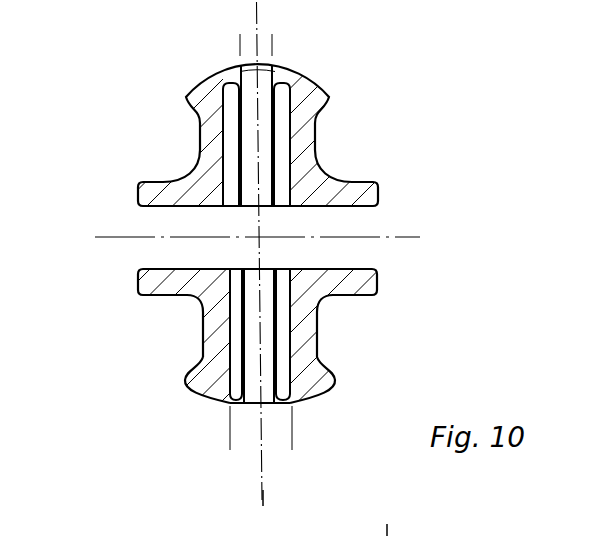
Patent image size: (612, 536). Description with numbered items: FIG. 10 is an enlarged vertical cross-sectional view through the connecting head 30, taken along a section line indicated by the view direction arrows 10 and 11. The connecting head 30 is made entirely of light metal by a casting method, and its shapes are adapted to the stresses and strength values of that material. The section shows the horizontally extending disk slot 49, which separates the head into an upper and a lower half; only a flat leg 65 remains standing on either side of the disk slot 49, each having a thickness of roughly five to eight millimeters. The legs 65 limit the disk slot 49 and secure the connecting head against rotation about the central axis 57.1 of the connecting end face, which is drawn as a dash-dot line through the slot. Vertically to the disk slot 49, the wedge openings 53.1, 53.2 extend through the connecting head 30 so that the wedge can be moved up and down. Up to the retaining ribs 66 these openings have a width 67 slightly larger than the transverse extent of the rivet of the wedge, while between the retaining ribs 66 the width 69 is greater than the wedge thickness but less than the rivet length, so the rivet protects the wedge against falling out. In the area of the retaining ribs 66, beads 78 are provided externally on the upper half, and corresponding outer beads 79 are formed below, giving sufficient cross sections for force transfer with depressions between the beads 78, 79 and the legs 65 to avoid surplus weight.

The connecting head 30 is at (105, 86).
The flat leg 65 is at (155, 182).
The retaining rib 66 is at (237, 82).
The bead 78 is at (198, 92).
The outer bead 79 is at (198, 383).
The wedge opening 53.1 is at (263, 148).
The wedge opening 53.2 is at (265, 335).
The central axis 57.1 is at (263, 237).
The disk slot 49 is at (224, 252).
The width 69 is at (305, 42).
The width 67 is at (343, 442).
The transverse direction 11 is at (318, 498).
The longitudinal direction 10 is at (345, 531).